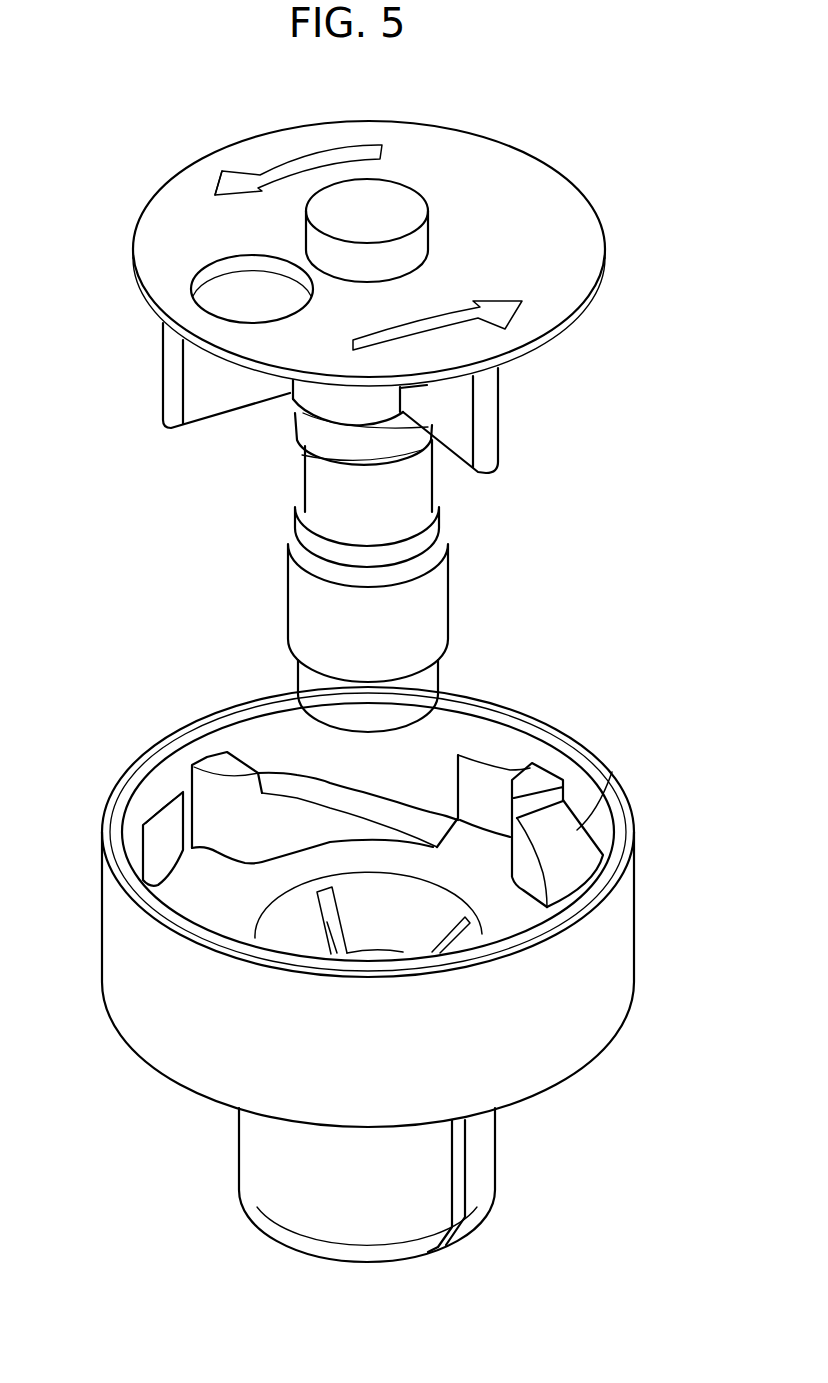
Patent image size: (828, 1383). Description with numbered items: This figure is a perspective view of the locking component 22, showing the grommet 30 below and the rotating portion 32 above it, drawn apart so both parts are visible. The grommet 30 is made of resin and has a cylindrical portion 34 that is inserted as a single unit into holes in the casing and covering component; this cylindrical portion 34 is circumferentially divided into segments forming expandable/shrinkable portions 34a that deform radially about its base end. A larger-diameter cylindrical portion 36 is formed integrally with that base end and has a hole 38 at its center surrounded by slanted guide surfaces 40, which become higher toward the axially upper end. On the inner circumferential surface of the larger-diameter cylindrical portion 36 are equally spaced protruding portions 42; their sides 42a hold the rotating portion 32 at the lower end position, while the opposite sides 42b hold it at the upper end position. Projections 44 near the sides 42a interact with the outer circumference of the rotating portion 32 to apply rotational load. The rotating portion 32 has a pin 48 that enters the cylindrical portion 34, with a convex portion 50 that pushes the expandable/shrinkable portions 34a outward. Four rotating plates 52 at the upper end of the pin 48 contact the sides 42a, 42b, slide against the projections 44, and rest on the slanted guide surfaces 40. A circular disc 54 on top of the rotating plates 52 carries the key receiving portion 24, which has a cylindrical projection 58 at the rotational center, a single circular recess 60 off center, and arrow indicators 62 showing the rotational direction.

The locking component 22 is at (472, 71).
The key receiving portion 24 is at (283, 193).
The grommet 30 is at (221, 1138).
The rotating portion 32 is at (560, 176).
The cylindrical portion 34 is at (288, 1208).
The expandable/shrinkable portions 34a is at (489, 1159).
The larger-diameter cylindrical portion 36 is at (101, 933).
The hole 38 is at (377, 952).
The slanted guide surfaces 40 is at (290, 776).
The protruding portions 42 is at (223, 758).
The sides 42a is at (215, 788).
The sides 42b is at (246, 757).
The projections 44 is at (493, 780).
The pin 48 is at (409, 707).
The convex portion 50 is at (423, 612).
The rotating plates 52 is at (179, 431).
The circular disc 54 is at (553, 333).
The projection 58 is at (402, 198).
The recess 60 is at (228, 273).
The indicators 62 is at (347, 147).